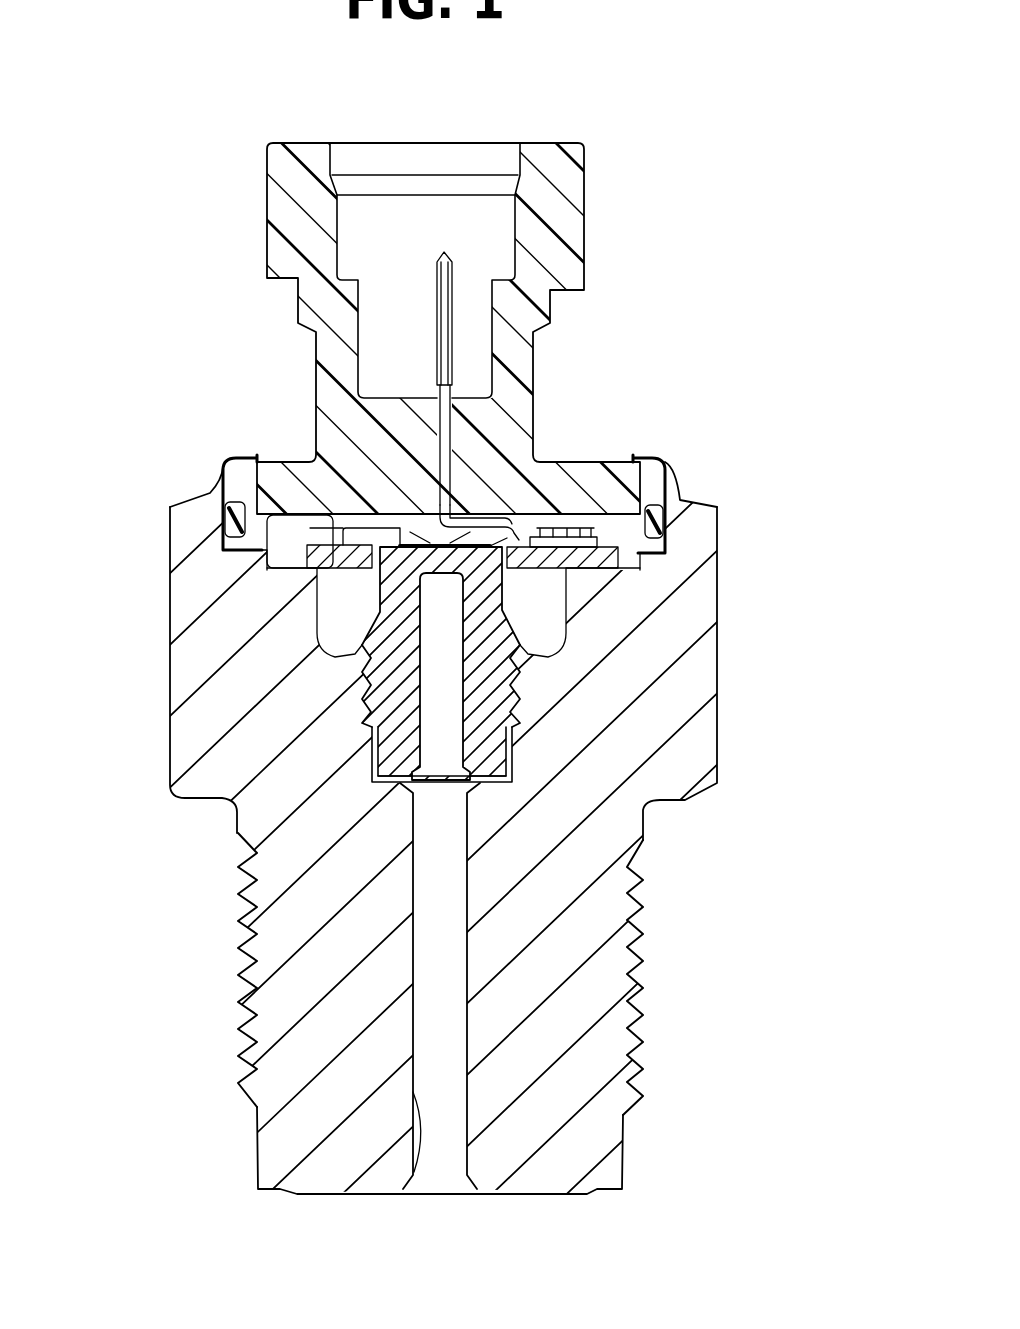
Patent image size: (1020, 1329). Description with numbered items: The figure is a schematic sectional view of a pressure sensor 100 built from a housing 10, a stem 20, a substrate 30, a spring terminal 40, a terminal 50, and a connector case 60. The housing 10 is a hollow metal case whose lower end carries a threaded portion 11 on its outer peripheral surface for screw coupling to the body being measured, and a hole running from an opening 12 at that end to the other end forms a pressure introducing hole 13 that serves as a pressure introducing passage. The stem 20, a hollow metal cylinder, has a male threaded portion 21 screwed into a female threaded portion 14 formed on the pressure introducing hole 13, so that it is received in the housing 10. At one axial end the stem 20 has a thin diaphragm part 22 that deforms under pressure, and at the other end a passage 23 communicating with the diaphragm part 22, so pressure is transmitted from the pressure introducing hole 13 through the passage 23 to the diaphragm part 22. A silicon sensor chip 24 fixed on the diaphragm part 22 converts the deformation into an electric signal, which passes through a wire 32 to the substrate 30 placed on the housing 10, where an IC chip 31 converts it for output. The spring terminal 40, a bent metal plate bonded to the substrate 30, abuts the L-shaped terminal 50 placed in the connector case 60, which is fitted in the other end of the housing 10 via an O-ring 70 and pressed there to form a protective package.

The pressure sensor 100 is at (740, 282).
The housing 10 is at (721, 752).
The threaded portion 11 is at (641, 953).
The opening 12 is at (437, 1194).
The pressure introducing hole 13 is at (420, 1100).
The female threaded portion 14 is at (511, 698).
The stem 20 is at (489, 701).
The male threaded portion 21 is at (511, 677).
The diaphragm part 22 is at (425, 553).
The passage 23 is at (418, 755).
The sensor chip 24 is at (390, 537).
The substrate 30 is at (578, 558).
The IC chip 31 is at (596, 541).
The wire 32 is at (575, 518).
The spring terminal 40 is at (236, 540).
The terminal 50 is at (447, 417).
The connector case 60 is at (529, 312).
The O-ring 70 is at (668, 525).